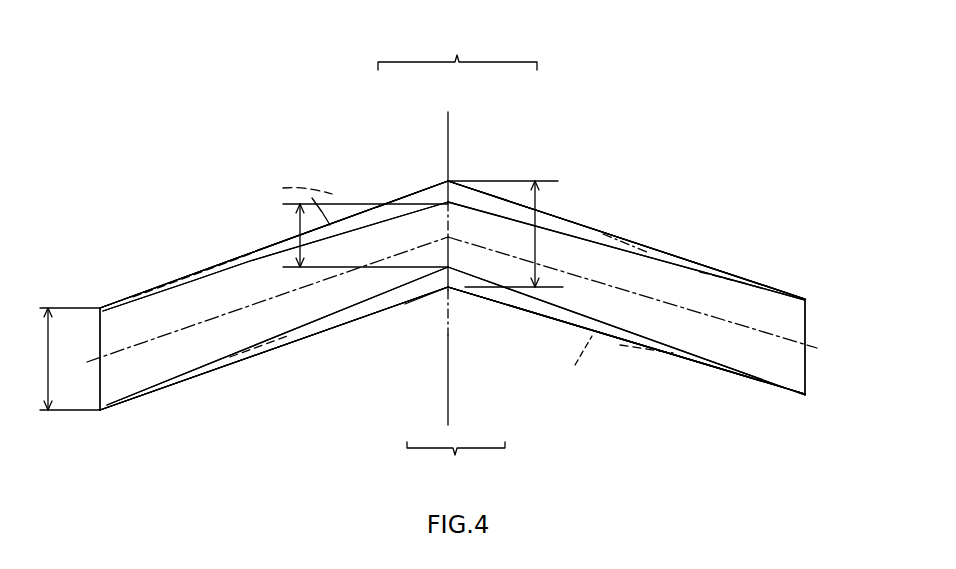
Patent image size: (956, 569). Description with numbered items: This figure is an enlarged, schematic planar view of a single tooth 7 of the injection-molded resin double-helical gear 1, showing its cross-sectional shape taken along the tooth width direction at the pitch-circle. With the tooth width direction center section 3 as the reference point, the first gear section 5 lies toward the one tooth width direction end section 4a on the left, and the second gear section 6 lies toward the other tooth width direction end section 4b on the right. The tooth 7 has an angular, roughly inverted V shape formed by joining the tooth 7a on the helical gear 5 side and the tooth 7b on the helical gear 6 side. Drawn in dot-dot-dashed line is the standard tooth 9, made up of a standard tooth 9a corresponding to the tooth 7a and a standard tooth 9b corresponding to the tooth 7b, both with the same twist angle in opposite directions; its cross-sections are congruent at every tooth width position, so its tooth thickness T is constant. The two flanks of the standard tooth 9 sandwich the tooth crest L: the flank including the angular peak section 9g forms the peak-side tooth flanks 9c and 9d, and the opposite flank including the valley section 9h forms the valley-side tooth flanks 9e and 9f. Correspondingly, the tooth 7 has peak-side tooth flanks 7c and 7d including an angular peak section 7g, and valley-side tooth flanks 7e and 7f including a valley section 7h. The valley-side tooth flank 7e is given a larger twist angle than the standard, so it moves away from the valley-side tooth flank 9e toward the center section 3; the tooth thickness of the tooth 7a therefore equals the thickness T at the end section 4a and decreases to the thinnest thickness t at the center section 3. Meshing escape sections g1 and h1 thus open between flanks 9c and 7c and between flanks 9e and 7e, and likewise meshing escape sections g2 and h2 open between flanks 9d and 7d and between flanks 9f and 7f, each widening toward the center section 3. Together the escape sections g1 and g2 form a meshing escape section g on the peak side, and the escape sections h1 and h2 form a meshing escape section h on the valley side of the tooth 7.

The resin double-helical gear 1 is at (748, 248).
The tooth width direction center section 3 is at (422, 266).
The one tooth width direction end section 4a is at (83, 336).
The other tooth width direction end section 4b is at (828, 328).
The first gear section 5 is at (274, 295).
The second gear section 6 is at (626, 288).
The tooth 7 is at (676, 346).
The tooth on the helical gear 5 side 7a is at (274, 309).
The tooth on the helical gear 6 side 7b is at (626, 309).
The peak-side tooth flank 7c is at (274, 228).
The peak-side tooth flank 7d is at (626, 220).
The valley-side tooth flank 7e is at (274, 338).
The valley-side tooth flank 7f is at (626, 331).
The angular peak section 7g is at (456, 174).
The valley section 7h is at (451, 316).
The standard tooth 9 is at (592, 345).
The standard tooth 9a is at (191, 230).
The standard tooth 9b is at (705, 232).
The peak-side tooth flank 9c is at (287, 177).
The peak-side tooth flank 9d is at (619, 188).
The valley-side tooth flank 9e is at (282, 382).
The valley-side tooth flank 9f is at (632, 383).
The angular peak section 9g is at (481, 146).
The valley section 9h is at (433, 320).
The tooth crest L is at (452, 279).
The tooth thickness T is at (294, 295).
The thinnest thickness t is at (344, 235).
The meshing escape section g is at (457, 49).
The meshing escape section g1 is at (377, 142).
The meshing escape section g2 is at (519, 139).
The meshing escape section h is at (456, 461).
The meshing escape section h1 is at (410, 368).
The meshing escape section h2 is at (496, 366).